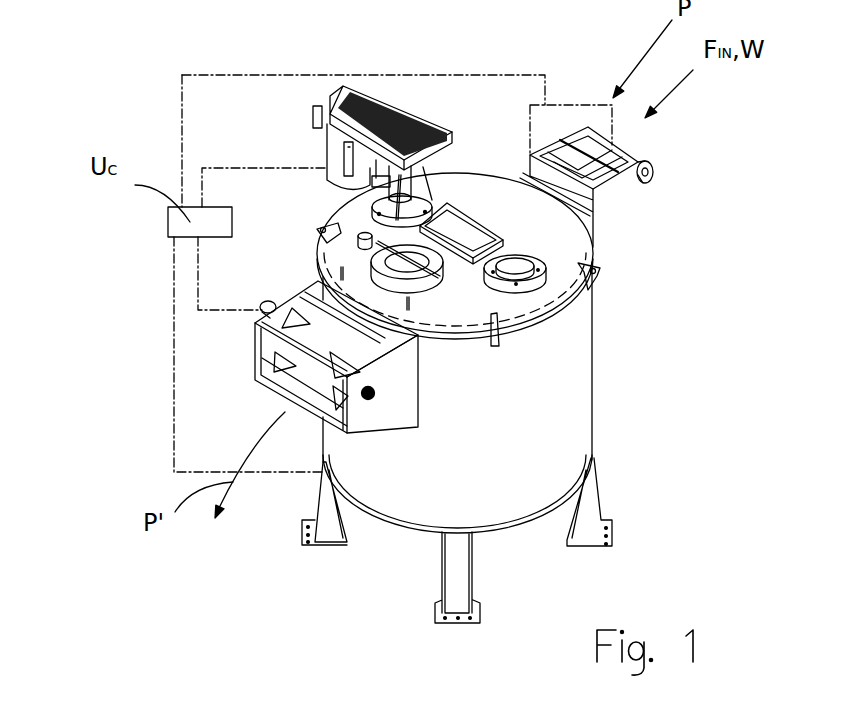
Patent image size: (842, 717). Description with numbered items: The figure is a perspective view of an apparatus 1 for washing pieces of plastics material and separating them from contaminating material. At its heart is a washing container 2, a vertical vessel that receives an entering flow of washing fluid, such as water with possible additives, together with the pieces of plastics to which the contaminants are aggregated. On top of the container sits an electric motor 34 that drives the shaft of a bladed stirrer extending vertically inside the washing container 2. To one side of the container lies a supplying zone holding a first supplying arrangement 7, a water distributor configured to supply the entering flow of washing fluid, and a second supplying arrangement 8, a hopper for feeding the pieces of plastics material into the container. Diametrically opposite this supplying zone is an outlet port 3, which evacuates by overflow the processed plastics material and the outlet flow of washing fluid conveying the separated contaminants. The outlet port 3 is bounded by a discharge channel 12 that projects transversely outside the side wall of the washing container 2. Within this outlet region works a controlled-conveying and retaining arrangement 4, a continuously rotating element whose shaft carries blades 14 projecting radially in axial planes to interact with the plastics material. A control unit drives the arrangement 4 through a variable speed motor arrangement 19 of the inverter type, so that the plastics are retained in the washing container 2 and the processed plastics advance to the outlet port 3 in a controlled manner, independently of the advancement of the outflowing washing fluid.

The apparatus 1 is at (625, 348).
The washing container 2 is at (580, 429).
The outlet port 3 is at (295, 428).
The controlled-conveying and retaining arrangement 4 is at (253, 378).
The first supplying arrangement 7 is at (653, 145).
The second supplying arrangement 8 is at (552, 132).
The discharge channel 12 is at (390, 412).
The blades 14 is at (325, 342).
The variable speed motor arrangement 19 is at (268, 303).
The electric motor 34 is at (327, 138).